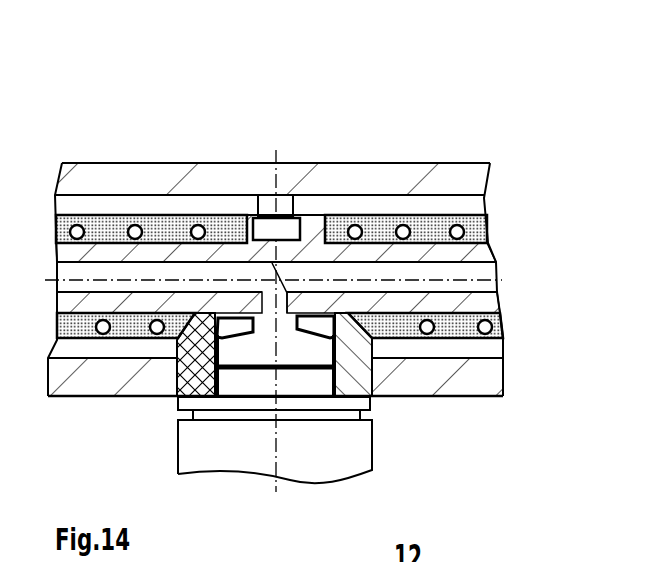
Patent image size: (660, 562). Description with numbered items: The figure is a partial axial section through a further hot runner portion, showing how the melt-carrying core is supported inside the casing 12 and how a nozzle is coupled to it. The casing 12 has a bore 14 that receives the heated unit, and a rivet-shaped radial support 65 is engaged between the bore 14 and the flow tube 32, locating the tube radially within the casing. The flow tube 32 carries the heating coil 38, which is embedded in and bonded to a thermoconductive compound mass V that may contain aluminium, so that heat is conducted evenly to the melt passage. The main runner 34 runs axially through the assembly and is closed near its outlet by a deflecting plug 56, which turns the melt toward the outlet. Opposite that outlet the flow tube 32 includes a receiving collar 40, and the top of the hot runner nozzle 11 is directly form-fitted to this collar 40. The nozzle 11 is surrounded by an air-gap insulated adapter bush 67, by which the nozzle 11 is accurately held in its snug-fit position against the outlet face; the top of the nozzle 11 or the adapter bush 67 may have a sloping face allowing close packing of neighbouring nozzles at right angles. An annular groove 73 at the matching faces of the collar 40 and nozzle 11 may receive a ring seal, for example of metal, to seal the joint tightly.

The casing 12 is at (258, 182).
The rivet-shaped radial support 65 is at (284, 207).
The bore 14 is at (397, 197).
The receiving collar 40 is at (318, 208).
The flow tube 32 is at (213, 250).
The thermoconductive compound mass V is at (156, 226).
The heating coil 38 is at (75, 226).
The deflecting plug 56 is at (442, 272).
The main runner 34 is at (480, 270).
The annular groove 73 is at (178, 358).
The adapter bush 67 is at (355, 370).
The hot runner nozzle 11 is at (247, 383).